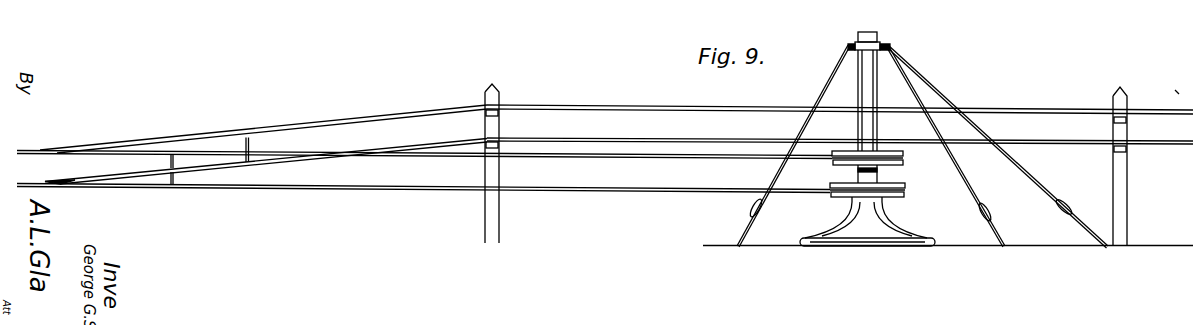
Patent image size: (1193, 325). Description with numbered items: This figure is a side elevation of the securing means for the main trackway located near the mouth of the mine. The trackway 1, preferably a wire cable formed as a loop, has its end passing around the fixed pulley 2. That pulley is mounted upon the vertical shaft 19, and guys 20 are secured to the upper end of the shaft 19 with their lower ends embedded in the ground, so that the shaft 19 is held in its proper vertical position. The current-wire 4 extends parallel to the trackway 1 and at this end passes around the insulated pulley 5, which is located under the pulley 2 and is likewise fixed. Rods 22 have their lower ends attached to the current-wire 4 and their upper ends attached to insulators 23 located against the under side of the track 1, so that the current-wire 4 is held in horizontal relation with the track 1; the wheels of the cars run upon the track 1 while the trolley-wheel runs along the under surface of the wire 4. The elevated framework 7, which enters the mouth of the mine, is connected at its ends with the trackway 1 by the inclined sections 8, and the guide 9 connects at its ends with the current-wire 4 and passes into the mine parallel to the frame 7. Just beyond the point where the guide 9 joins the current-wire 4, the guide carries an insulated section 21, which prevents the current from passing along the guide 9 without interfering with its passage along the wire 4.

The trackway 1 is at (704, 160).
The fixed pulley 2 is at (904, 155).
The current-wire 4 is at (691, 188).
The insulated pulley 5 is at (910, 181).
The framework 7 is at (718, 105).
The inclined section 8 is at (432, 110).
The guide 9 is at (1086, 143).
The vertical shaft 19 is at (877, 85).
The guy 20 is at (822, 88).
The insulated section 21 is at (58, 184).
The rod 22 is at (176, 178).
The insulator 23 is at (170, 156).